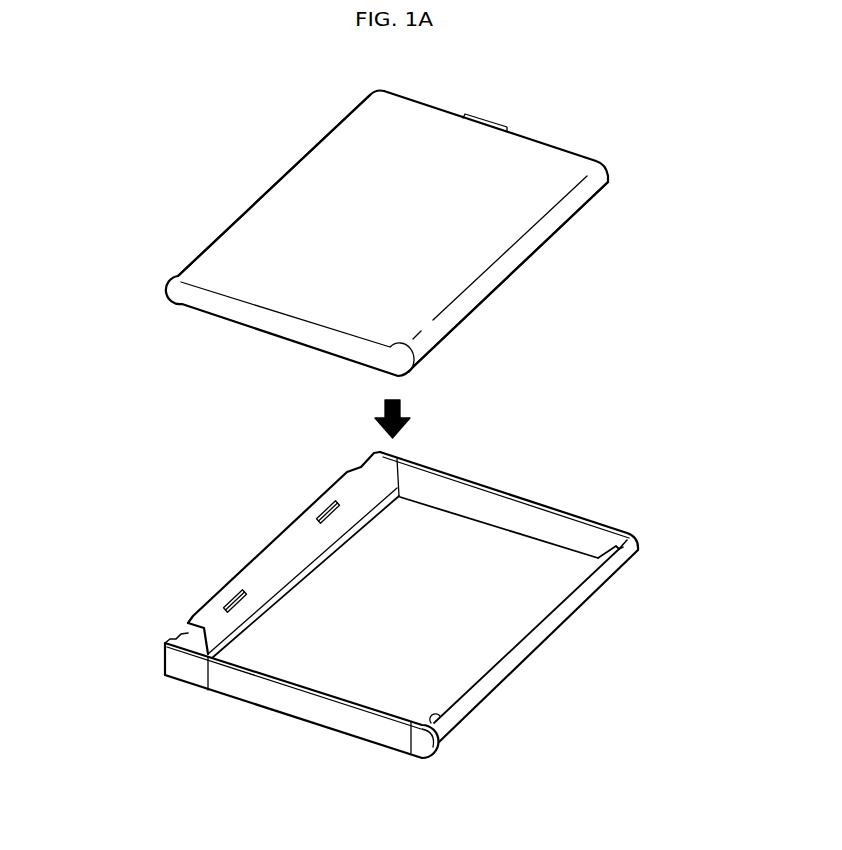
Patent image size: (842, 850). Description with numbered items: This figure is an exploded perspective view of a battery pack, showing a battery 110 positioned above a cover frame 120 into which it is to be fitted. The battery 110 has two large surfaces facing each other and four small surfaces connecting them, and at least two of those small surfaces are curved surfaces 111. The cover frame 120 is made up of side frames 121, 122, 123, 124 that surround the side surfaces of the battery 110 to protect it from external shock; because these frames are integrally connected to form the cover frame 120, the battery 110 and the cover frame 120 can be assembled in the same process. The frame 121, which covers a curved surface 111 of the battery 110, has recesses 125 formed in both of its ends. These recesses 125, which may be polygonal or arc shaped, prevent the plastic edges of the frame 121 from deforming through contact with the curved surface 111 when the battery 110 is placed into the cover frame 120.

The battery 110 is at (368, 234).
The curved surface 111 is at (172, 284).
The cover frame 120 is at (412, 598).
The side frame 121 is at (553, 628).
The side frame 122 is at (498, 507).
The side frame 123 is at (277, 698).
The side frame 124 is at (190, 632).
The recess 125 is at (630, 531).